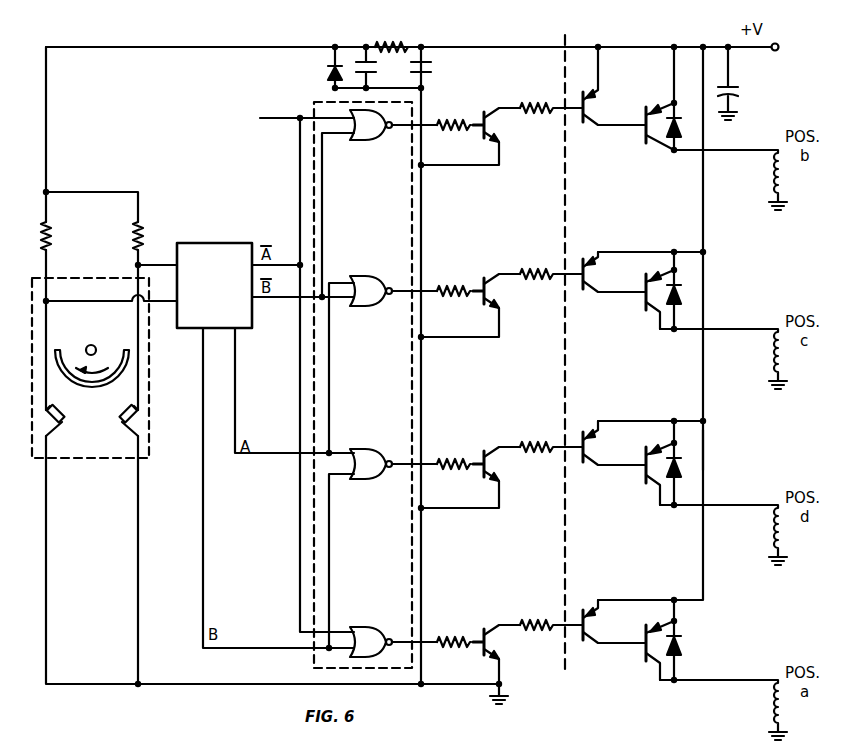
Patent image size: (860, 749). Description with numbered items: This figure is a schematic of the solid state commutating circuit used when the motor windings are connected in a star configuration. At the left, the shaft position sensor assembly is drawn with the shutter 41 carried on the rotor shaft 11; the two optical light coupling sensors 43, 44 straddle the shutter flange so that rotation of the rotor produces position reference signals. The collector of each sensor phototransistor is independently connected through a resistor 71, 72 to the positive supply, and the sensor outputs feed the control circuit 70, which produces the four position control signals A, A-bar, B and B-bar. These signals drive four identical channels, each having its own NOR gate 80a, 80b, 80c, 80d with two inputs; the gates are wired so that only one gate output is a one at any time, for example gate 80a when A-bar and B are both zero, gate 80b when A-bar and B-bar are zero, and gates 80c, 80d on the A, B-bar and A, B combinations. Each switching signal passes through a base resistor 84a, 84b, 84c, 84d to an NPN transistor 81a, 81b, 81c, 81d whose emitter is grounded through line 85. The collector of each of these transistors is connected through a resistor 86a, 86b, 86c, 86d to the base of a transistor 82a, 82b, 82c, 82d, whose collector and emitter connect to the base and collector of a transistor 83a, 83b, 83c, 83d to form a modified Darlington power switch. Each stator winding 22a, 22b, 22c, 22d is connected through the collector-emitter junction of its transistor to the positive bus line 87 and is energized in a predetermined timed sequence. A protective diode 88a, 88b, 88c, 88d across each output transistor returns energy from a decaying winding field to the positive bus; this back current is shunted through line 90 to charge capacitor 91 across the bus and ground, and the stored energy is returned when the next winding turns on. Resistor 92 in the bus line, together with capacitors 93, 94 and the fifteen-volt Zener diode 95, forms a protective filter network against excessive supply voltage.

The capacitor 94 is at (349, 60).
The resistor 92 is at (383, 46).
The capacitor 93 is at (423, 46).
The Zener diode 95 is at (330, 70).
The positive bus line 87 is at (636, 46).
The capacitor 91 is at (735, 90).
The resistor 72 is at (51, 236).
The resistor 71 is at (143, 232).
The control circuit 70 is at (174, 330).
The shutter 41 is at (72, 356).
The shaft 11 is at (96, 345).
The optical light coupling sensor 44 is at (64, 420).
The optical light coupling sensor 43 is at (134, 410).
The ground line 85 is at (422, 374).
The line 90 is at (704, 452).
The NOR gate 80b is at (362, 137).
The base resistor 84b is at (443, 118).
The transistor 81b is at (484, 136).
The resistor 86b is at (527, 114).
The transistor 82b is at (580, 96).
The transistor 83b is at (646, 122).
The protective diode 88b is at (684, 128).
The stator winding 22b is at (772, 172).
The NOR gate 80c is at (362, 276).
The base resistor 84c is at (446, 286).
The transistor 81c is at (490, 300).
The resistor 86c is at (530, 270).
The transistor 82c is at (575, 262).
The transistor 83c is at (646, 290).
The protective diode 88c is at (684, 298).
The stator winding 22c is at (772, 360).
The NOR gate 80d is at (364, 448).
The base resistor 84d is at (446, 459).
The transistor 81d is at (490, 478).
The resistor 86d is at (530, 444).
The transistor 82d is at (575, 435).
The transistor 83d is at (646, 468).
The protective diode 88d is at (684, 474).
The stator winding 22d is at (770, 536).
The NOR gate 80a is at (364, 628).
The base resistor 84a is at (446, 636).
The transistor 81a is at (488, 624).
The resistor 86a is at (532, 622).
The transistor 82a is at (578, 612).
The transistor 83a is at (646, 644).
The protective diode 88a is at (684, 654).
The stator winding 22a is at (773, 705).